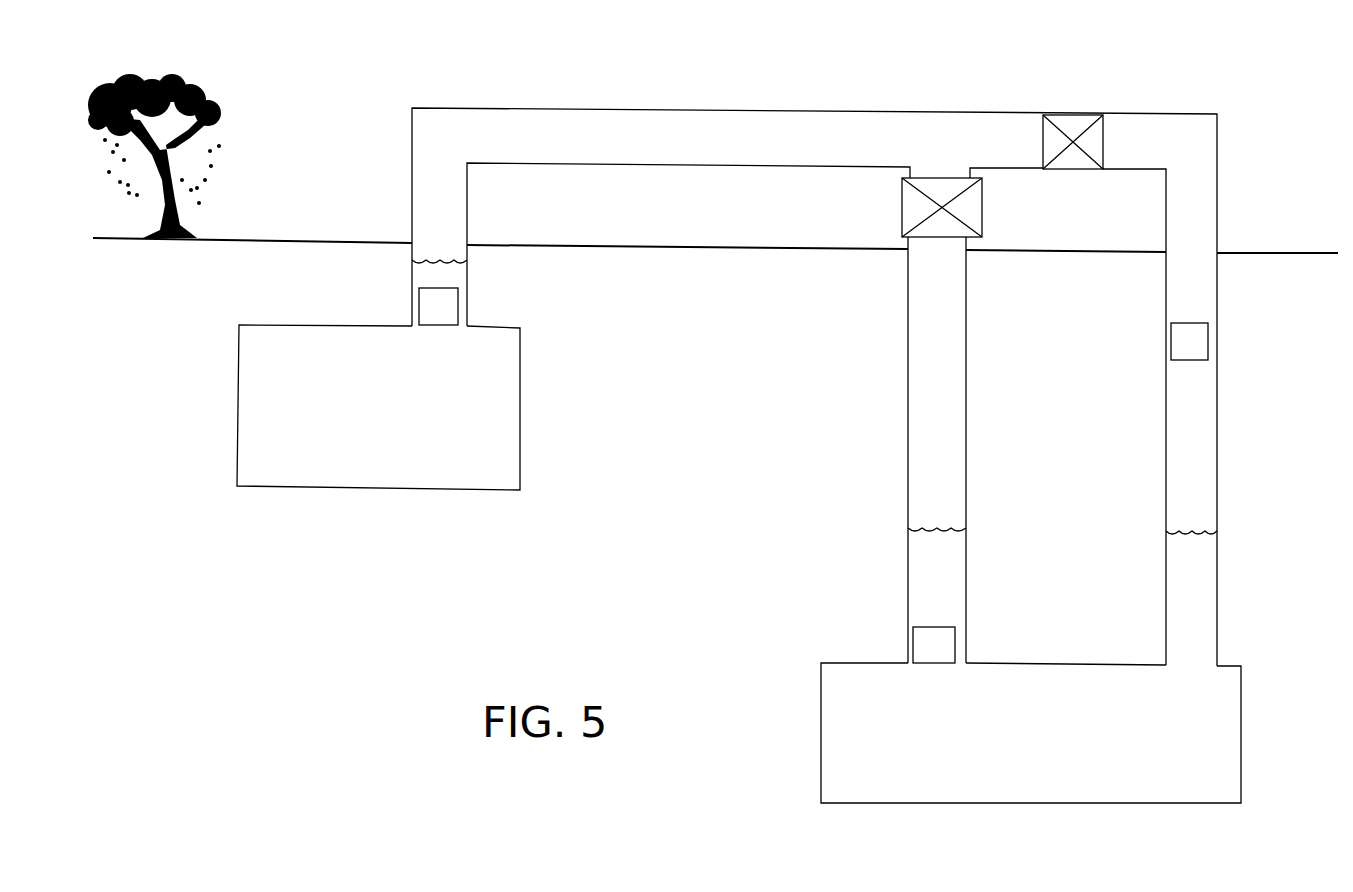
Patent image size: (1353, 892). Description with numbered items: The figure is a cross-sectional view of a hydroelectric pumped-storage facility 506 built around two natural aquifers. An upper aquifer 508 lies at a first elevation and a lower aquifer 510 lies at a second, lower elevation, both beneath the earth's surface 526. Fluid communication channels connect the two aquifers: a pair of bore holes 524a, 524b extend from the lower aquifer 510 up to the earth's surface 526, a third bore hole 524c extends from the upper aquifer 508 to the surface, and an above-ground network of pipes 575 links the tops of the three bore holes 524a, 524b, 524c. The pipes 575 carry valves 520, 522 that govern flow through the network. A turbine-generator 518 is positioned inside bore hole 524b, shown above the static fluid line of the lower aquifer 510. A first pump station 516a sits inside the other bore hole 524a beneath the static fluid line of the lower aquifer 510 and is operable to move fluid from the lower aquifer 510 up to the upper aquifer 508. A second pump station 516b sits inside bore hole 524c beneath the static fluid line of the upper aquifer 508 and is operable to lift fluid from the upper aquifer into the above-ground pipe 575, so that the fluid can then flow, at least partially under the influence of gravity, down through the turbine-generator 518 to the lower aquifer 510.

The hydroelectric pumped-storage facility 506 is at (180, 295).
The upper aquifer 508 is at (399, 428).
The lower aquifer 510 is at (1064, 737).
The first pump station 516a is at (935, 627).
The second pump station 516b is at (467, 290).
The turbine-generator 518 is at (1215, 342).
The valve 520 is at (1082, 113).
The valve 522 is at (902, 217).
The bore hole 524a is at (927, 435).
The bore hole 524b is at (1193, 452).
The bore hole 524c is at (443, 214).
The earth's surface 526 is at (1258, 253).
The network of pipes 575 is at (598, 108).